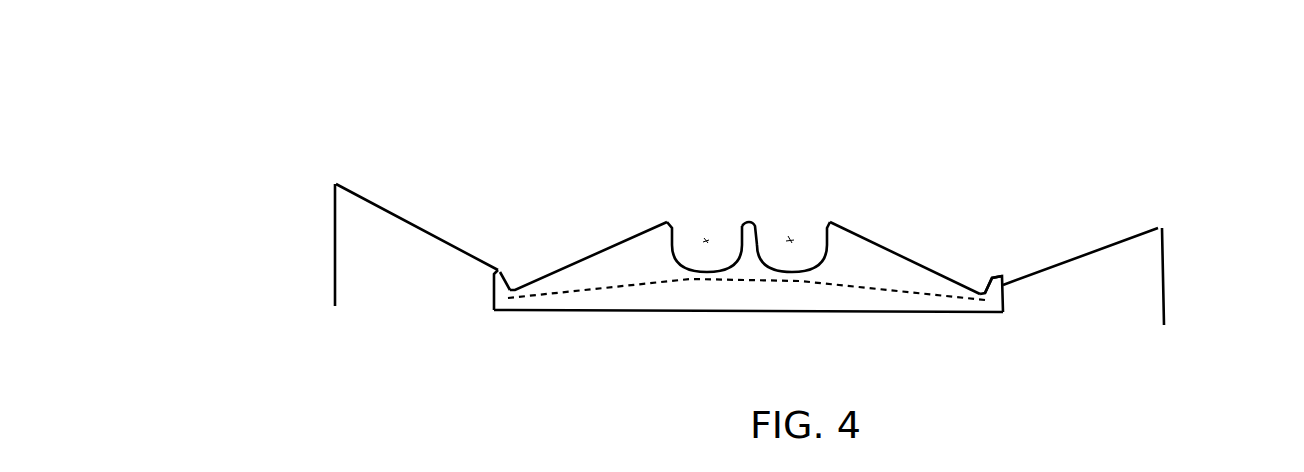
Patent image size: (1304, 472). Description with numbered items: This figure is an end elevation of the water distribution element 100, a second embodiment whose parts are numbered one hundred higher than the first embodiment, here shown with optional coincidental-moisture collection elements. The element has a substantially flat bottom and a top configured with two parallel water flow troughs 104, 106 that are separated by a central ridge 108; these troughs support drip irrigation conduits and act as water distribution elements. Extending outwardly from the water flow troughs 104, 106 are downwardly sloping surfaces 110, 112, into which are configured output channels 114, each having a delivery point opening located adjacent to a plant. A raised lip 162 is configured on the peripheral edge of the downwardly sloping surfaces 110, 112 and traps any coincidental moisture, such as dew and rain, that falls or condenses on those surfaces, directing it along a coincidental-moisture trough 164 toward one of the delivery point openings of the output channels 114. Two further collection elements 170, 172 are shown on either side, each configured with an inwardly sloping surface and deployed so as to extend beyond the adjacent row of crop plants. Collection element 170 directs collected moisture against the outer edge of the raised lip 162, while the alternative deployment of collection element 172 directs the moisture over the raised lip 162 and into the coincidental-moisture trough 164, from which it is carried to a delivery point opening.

The water distribution element 100 is at (278, 91).
The water flow trough 104 is at (697, 247).
The water flow trough 106 is at (802, 252).
The central ridge 108 is at (745, 225).
The downwardly sloping surface 110 is at (608, 228).
The downwardly sloping surface 112 is at (880, 237).
The output channel 114 is at (628, 268).
The raised lip 162 is at (510, 278).
The coincidental-moisture trough 164 is at (982, 283).
The coincidental-moisture collection element 170 is at (1085, 258).
The coincidental-moisture collection element 172 is at (420, 232).